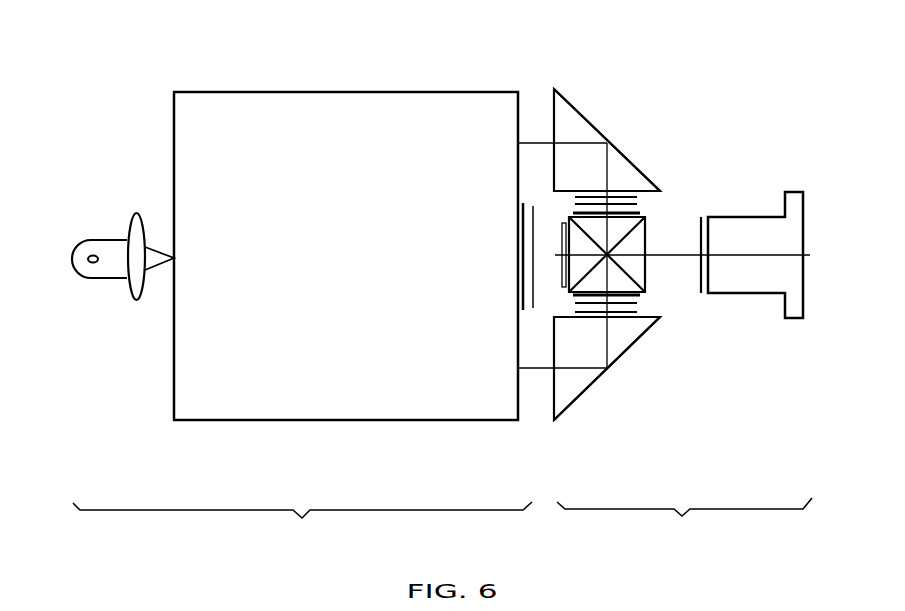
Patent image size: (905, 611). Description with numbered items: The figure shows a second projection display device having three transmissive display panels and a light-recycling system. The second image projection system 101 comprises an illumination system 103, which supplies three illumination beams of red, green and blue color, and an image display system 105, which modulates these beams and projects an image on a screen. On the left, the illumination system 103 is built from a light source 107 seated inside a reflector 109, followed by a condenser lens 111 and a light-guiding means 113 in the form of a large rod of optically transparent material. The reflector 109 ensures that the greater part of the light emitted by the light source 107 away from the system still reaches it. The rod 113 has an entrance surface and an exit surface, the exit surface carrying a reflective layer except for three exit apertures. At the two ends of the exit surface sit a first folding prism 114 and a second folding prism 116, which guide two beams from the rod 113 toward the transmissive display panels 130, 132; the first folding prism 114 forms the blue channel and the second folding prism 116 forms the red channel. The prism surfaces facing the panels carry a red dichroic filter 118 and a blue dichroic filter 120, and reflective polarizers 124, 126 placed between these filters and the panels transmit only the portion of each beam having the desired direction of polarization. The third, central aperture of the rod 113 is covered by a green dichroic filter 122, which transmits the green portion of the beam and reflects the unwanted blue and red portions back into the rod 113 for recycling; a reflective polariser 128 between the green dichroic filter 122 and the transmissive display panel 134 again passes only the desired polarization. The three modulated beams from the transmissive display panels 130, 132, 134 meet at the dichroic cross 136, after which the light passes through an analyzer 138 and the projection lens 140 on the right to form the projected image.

The second image projection system 101 is at (248, 542).
The illumination system 103 is at (302, 524).
The image display system 105 is at (684, 521).
The light source 107 is at (92, 263).
The reflector 109 is at (73, 248).
The condenser lens 111 is at (138, 302).
The light-guiding means 113 is at (235, 421).
The first folding prism 114 is at (585, 391).
The second folding prism 116 is at (585, 119).
The red dichroic filter 118 is at (628, 194).
The blue dichroic filter 120 is at (628, 318).
The green dichroic filter 122 is at (523, 203).
The reflective polarizer 124 is at (640, 201).
The reflective polarizer 126 is at (633, 303).
The reflective polariser 128 is at (534, 232).
The transmissive display panel 130 is at (645, 214).
The transmissive display panel 132 is at (643, 294).
The transmissive display panel 134 is at (562, 285).
The dichroic cross 136 is at (645, 238).
The analyzer 138 is at (702, 217).
The projection lens 140 is at (755, 217).